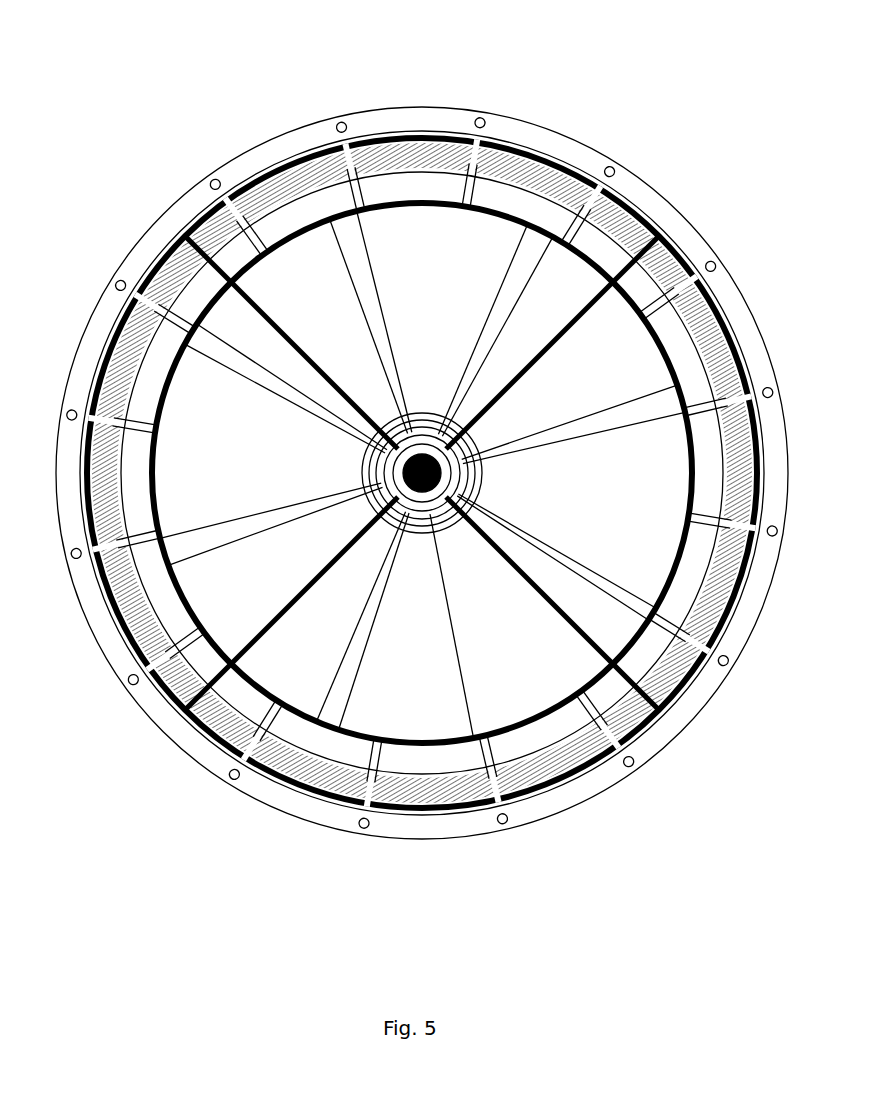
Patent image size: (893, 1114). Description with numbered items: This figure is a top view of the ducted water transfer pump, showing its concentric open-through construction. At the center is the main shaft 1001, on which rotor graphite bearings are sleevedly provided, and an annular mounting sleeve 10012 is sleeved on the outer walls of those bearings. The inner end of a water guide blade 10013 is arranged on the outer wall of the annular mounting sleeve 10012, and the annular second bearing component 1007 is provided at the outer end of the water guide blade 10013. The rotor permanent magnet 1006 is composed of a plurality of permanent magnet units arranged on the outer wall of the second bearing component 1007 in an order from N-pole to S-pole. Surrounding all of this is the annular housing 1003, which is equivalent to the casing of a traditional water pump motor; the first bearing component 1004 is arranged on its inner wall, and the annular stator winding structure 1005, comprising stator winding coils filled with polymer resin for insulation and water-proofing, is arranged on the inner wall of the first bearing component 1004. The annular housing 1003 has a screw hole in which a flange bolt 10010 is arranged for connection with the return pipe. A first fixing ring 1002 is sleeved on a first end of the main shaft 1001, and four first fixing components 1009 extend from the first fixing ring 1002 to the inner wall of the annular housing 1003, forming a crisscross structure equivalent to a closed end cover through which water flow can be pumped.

The main shaft 1001 is at (418, 482).
The first fixing ring 1002 is at (426, 482).
The annular housing 1003 is at (87, 322).
The first bearing component 1004 is at (166, 245).
The annular stator winding structure 1005 is at (303, 177).
The rotor permanent magnet 1006 is at (422, 190).
The second bearing component 1007 is at (457, 432).
The first fixing component 1009 is at (550, 607).
The flange bolt 10010 is at (717, 668).
The annular mounting sleeve 10012 is at (415, 492).
The water guide blade 10013 is at (222, 610).